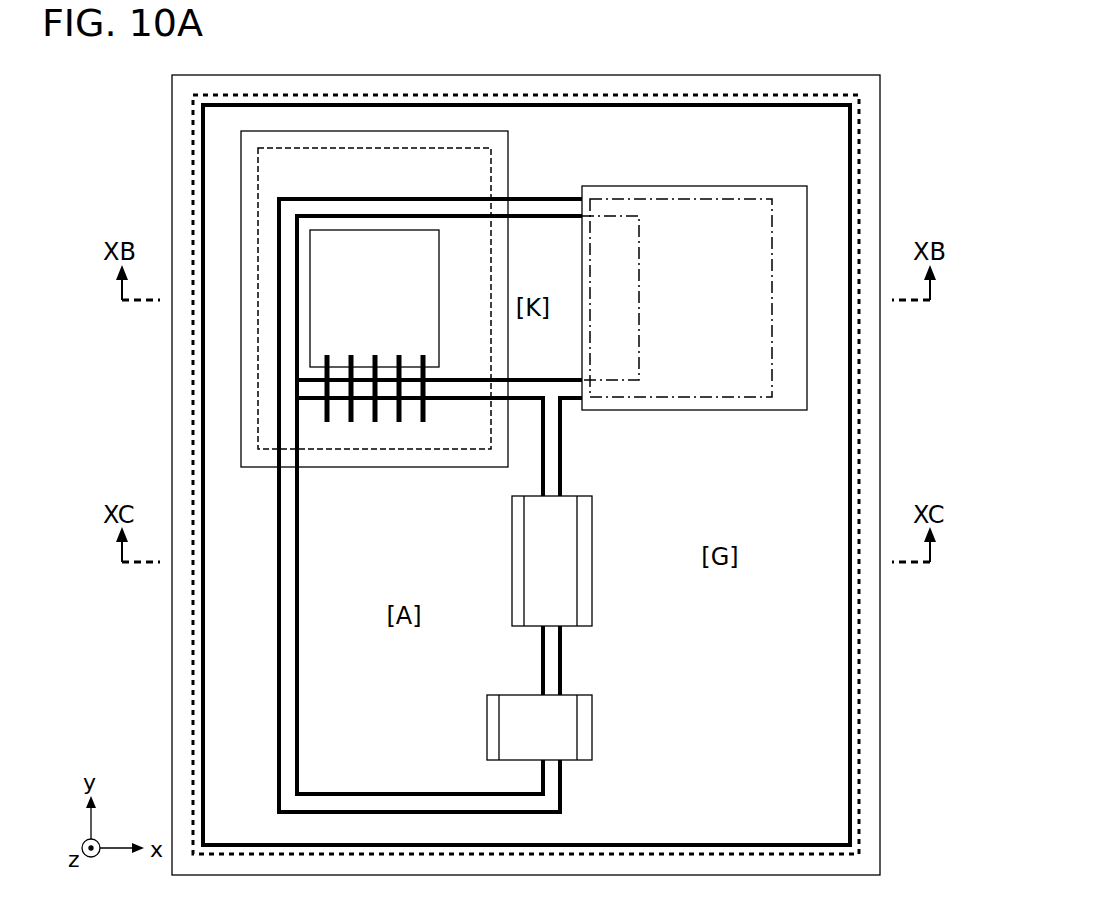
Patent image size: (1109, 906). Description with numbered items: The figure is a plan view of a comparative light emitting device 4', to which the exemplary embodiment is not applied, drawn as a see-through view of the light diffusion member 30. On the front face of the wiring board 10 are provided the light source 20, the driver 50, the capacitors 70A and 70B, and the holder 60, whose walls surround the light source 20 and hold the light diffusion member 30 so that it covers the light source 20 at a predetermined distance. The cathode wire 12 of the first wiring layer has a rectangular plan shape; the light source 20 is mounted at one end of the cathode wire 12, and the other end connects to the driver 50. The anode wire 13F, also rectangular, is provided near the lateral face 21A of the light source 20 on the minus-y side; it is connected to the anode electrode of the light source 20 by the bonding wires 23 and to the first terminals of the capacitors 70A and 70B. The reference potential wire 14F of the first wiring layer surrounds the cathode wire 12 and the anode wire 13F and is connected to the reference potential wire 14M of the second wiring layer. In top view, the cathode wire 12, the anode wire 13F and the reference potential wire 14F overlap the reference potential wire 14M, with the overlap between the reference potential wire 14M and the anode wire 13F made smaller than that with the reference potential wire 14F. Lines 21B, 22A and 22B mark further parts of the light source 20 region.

The wiring board 10 is at (172, 742).
The cathode wire 12 is at (345, 416).
The anode wire 13F is at (297, 667).
The reference potential wire 14F is at (197, 607).
The reference potential wire 14M is at (683, 853).
The light source 20 is at (302, 284).
The lateral face 21A is at (367, 370).
The outer cladding 21B is at (362, 228).
The second core portion 22A is at (305, 327).
The inner cladding 22B is at (442, 277).
The bonding wires 23 is at (325, 389).
The light diffusion member 30 is at (378, 163).
The driver 50 is at (719, 186).
The holder 60 is at (250, 185).
The capacitor 70A is at (512, 563).
The capacitor 70B is at (487, 727).
The light emitting device 4' is at (921, 52).